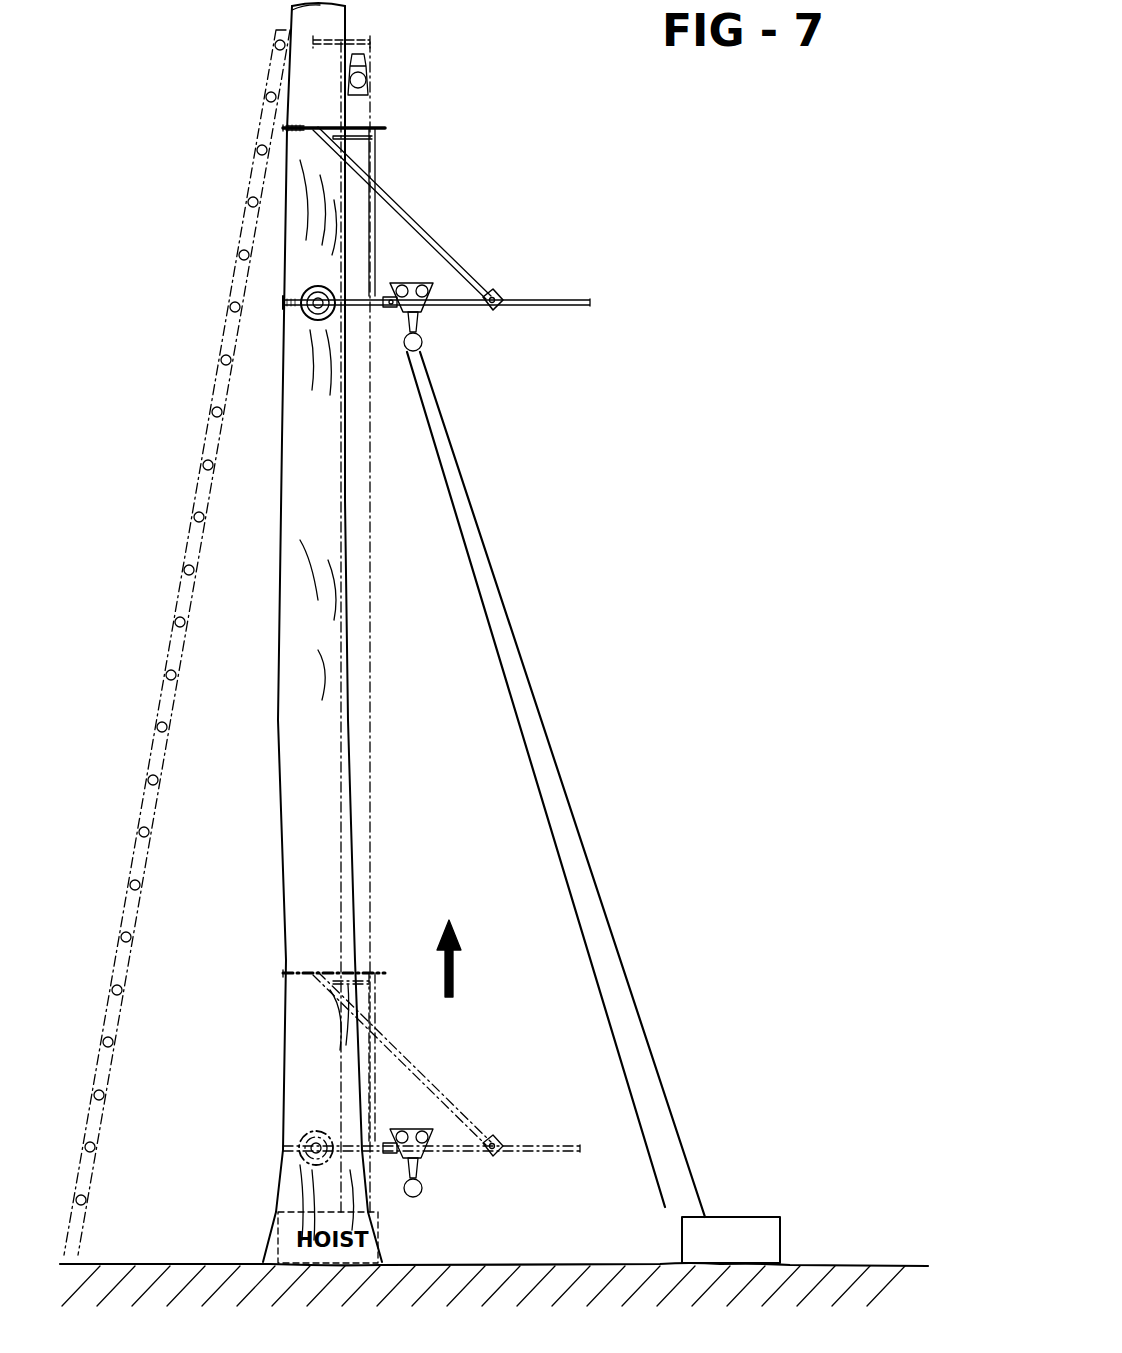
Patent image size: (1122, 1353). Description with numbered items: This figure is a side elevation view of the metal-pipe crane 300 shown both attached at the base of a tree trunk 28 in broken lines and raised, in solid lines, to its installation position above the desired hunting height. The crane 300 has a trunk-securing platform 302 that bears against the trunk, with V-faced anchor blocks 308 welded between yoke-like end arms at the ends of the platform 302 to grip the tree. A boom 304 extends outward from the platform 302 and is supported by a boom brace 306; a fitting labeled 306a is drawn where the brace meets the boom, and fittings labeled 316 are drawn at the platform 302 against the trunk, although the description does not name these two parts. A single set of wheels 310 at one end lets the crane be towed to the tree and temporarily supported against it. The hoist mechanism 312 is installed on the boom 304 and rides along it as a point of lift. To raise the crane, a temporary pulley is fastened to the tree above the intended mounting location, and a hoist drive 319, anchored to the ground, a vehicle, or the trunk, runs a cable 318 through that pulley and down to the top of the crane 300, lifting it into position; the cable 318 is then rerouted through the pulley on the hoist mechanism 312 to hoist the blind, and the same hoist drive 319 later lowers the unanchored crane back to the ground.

The utility pole 28 is at (297, 522).
The crane 300 is at (387, 659).
The trunk-securing platform 302 is at (376, 152).
The boom 304 is at (573, 298).
The boom brace 306 is at (432, 224).
The brace clamp 306a is at (495, 300).
The V-faced anchor blocks 308 is at (388, 141).
The wheels 310 is at (304, 296).
The hoist mechanism 312 is at (425, 330).
The pole clamps 316 is at (283, 128).
The cable 318 is at (530, 660).
The hoist drive 319 is at (745, 1217).